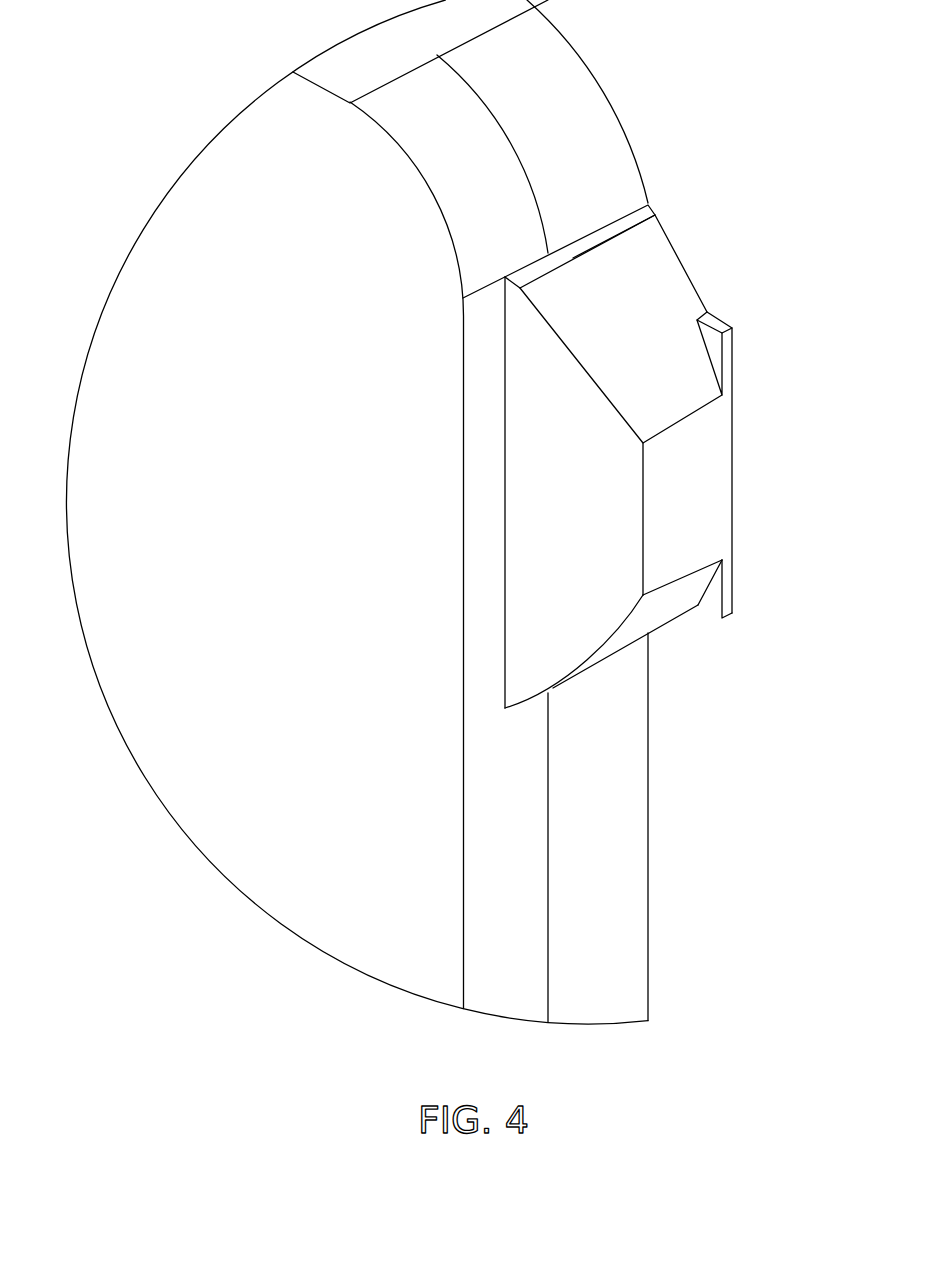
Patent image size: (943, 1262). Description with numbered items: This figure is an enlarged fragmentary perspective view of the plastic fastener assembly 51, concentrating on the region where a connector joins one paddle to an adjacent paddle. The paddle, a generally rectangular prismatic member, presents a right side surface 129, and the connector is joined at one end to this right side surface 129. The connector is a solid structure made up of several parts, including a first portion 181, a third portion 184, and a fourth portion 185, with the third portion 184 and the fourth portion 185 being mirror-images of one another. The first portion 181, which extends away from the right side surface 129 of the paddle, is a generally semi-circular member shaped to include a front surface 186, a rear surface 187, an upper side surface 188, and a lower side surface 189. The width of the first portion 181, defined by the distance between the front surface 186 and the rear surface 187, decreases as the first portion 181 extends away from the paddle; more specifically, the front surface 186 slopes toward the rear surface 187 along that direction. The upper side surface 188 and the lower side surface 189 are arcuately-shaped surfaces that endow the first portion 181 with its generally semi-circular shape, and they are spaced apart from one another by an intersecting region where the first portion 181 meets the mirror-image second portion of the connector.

The fan case 51 is at (733, 113).
The right side surface 129 is at (638, 883).
The first portion 181 is at (575, 443).
The third portion 184 is at (708, 335).
The fourth portion 185 is at (706, 606).
The front surface 186 is at (580, 516).
The rear surface 187 is at (683, 262).
The upper side surface 188 is at (658, 228).
The lower side surface 189 is at (660, 620).